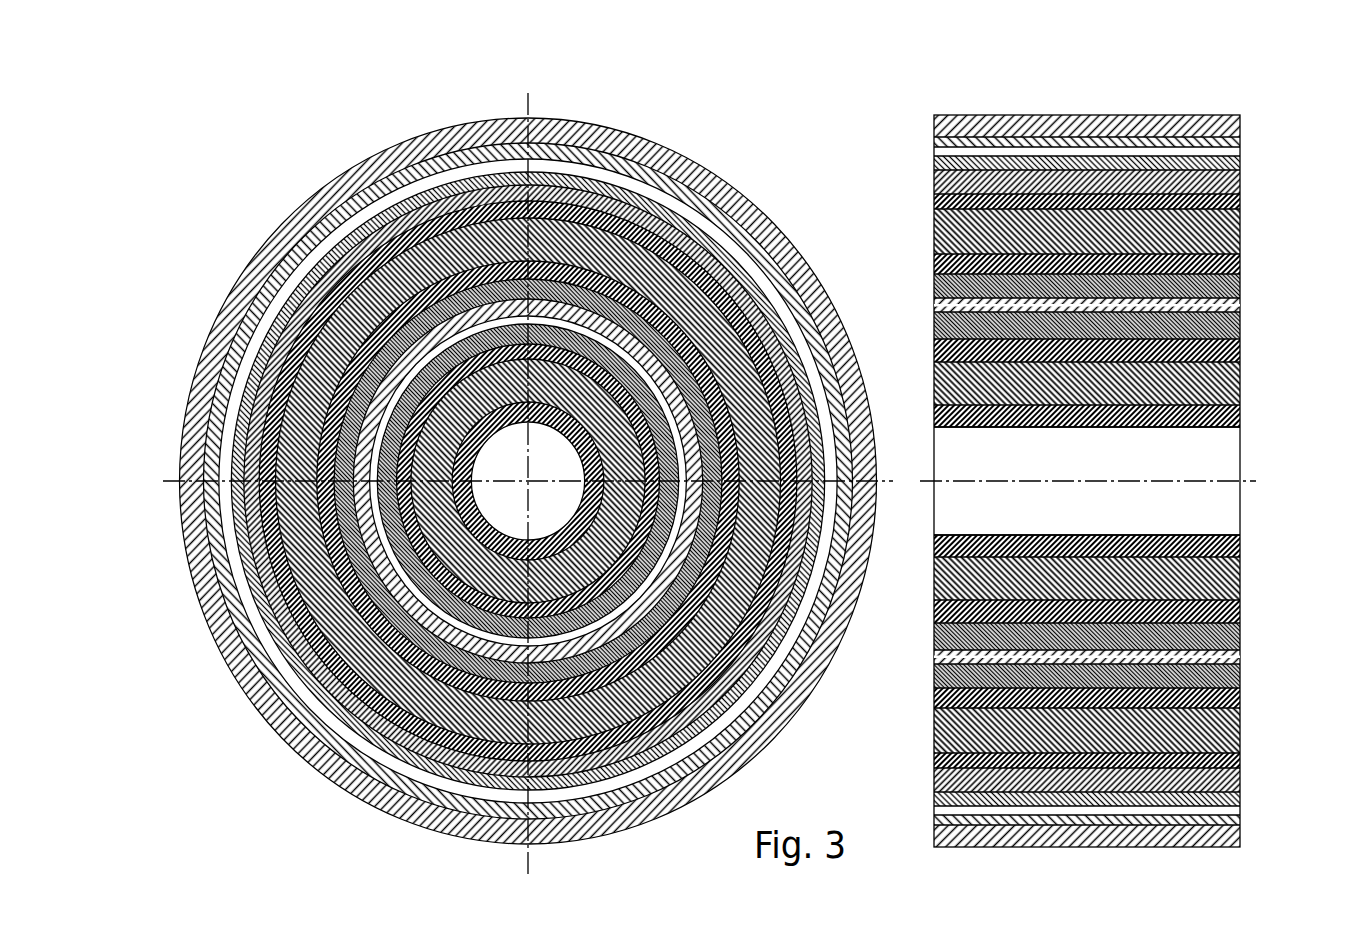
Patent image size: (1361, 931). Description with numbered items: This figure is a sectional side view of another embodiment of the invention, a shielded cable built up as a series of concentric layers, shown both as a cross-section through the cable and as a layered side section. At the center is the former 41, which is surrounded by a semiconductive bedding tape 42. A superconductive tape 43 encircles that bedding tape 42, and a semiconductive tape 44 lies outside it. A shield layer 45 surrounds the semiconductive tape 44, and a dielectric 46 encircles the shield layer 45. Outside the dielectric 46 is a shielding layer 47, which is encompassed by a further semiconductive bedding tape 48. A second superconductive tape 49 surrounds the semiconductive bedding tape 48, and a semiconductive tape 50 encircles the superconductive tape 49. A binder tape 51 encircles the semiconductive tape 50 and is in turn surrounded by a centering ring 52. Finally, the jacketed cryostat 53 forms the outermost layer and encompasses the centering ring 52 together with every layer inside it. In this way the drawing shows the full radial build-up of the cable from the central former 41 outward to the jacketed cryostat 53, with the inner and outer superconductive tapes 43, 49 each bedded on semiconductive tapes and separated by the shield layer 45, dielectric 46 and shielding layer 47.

The former 41 is at (1236, 446).
The semiconductive bedding tape 42 is at (1236, 407).
The superconductive tape 43 is at (1236, 374).
The semiconductive tape 44 is at (1236, 343).
The shield layer 45 is at (1236, 323).
The dielectric 46 is at (1236, 295).
The shielding layer 47 is at (1236, 275).
The semiconductive bedding tape 48 is at (1236, 255).
The superconductive tape 49 is at (1236, 223).
The semiconductive tape 50 is at (1236, 190).
The binder tape 51 is at (1236, 168).
The centering ring 52 is at (1236, 137).
The jacketed cryostat 53 is at (1236, 112).